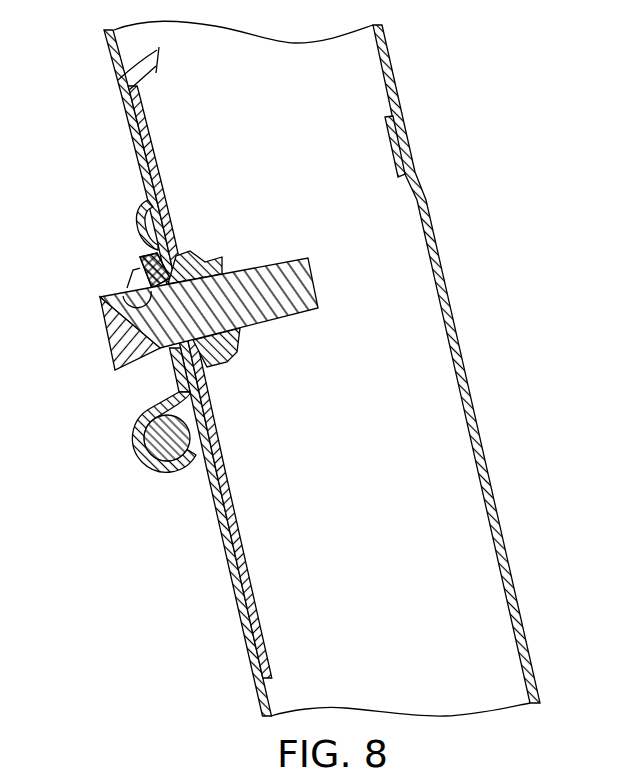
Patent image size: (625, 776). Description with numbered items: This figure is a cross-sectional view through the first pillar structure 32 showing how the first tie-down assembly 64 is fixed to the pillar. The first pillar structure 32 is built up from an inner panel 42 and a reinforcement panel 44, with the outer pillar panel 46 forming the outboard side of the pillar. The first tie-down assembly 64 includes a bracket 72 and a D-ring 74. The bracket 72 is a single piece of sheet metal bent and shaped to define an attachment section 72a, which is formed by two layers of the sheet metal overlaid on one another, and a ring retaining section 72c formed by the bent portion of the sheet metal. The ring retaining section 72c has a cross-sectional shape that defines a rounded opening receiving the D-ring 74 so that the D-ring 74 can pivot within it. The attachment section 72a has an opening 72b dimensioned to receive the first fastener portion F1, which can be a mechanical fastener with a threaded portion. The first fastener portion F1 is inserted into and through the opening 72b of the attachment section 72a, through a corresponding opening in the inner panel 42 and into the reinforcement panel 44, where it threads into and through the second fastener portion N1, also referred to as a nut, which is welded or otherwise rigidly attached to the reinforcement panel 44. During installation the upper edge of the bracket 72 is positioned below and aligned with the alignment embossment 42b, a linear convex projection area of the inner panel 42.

The first pillar structure 32 is at (499, 245).
The inner panel 42 is at (110, 72).
The alignment embossment 42b is at (137, 222).
The reinforcement panel 44 is at (151, 140).
The outer pillar panel 46 is at (471, 393).
The first tie-down assembly 64 is at (100, 326).
The bracket 72 is at (213, 406).
The attachment section 72a is at (150, 256).
The opening 72b is at (140, 306).
The ring retaining section 72c is at (168, 471).
The D-ring 74 is at (142, 457).
The second fastener portion N1 is at (196, 265).
The first fastener portion F1 is at (125, 343).